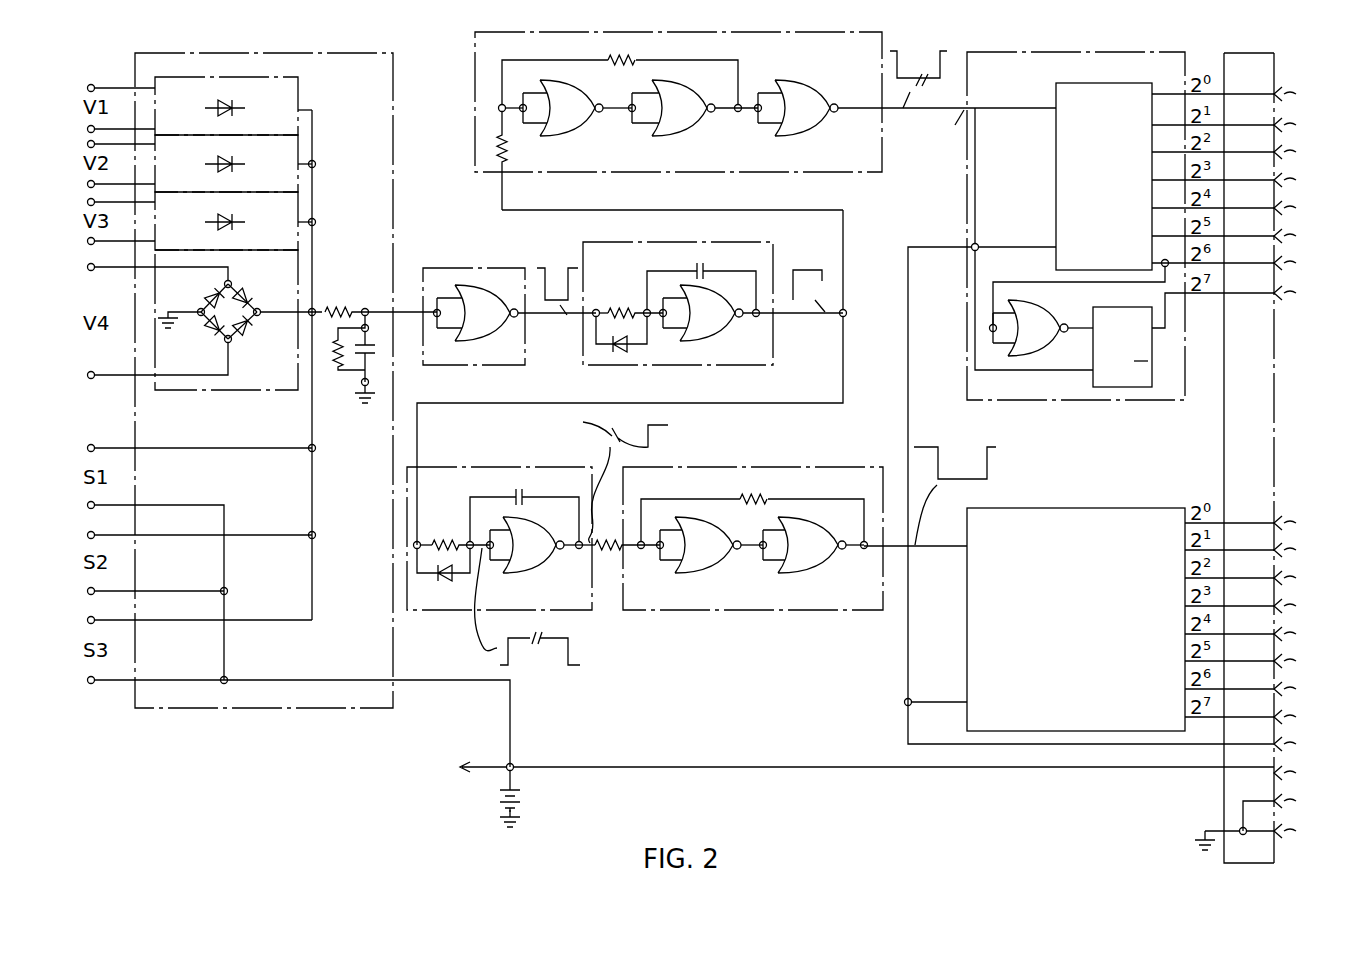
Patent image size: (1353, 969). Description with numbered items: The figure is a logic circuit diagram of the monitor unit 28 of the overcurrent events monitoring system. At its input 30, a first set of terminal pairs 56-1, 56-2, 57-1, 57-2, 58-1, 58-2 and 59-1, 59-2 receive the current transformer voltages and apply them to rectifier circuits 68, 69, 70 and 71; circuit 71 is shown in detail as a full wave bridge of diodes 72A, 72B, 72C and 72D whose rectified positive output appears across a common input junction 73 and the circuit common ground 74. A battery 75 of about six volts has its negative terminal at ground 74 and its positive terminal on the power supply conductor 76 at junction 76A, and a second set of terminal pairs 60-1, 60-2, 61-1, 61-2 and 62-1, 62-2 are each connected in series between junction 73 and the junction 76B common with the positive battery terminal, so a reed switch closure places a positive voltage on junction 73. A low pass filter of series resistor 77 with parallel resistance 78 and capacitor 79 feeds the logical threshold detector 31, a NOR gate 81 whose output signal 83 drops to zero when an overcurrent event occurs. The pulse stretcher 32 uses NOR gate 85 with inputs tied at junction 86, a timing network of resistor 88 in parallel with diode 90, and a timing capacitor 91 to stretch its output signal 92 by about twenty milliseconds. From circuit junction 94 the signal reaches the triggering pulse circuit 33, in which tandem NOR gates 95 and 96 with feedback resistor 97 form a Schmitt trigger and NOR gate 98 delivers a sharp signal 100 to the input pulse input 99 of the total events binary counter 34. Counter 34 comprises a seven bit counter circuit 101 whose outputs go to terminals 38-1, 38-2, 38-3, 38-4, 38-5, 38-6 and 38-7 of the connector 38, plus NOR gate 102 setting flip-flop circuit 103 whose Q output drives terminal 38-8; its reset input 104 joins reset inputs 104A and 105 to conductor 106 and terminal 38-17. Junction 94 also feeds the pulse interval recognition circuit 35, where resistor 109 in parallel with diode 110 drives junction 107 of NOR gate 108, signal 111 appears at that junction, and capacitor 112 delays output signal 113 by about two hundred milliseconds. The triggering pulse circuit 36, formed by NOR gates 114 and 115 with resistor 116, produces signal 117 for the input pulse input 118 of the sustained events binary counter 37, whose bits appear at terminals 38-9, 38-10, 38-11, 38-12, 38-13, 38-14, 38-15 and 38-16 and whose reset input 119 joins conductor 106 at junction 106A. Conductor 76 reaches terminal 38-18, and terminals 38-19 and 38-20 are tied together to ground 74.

The monitor unit 28 is at (712, 812).
The input 30 is at (230, 52).
The logical threshold detector 31 is at (454, 268).
The pulse stretcher 32 is at (714, 244).
The triggering pulse circuit 33 is at (514, 30).
The total events binary counter 34 is at (1122, 56).
The pulse interval recognition circuit 35 is at (537, 468).
The triggering pulse circuit 36 is at (850, 470).
The sustained events binary counter 37 is at (1106, 508).
The external socket connector 38 is at (1242, 56).
The connector terminal 38-1 is at (1309, 93).
The connector terminal 38-2 is at (1309, 124).
The connector terminal 38-3 is at (1309, 151).
The connector terminal 38-4 is at (1309, 179).
The connector terminal 38-5 is at (1309, 207).
The connector terminal 38-6 is at (1309, 235).
The connector terminal 38-7 is at (1309, 262).
The connector terminal 38-8 is at (1309, 292).
The connector terminal 38-9 is at (1309, 522).
The connector terminal 38-10 is at (1313, 549).
The connector terminal 38-11 is at (1313, 577).
The connector terminal 38-12 is at (1313, 605).
The connector terminal 38-13 is at (1313, 633).
The connector terminal 38-14 is at (1313, 660).
The connector terminal 38-15 is at (1313, 688).
The connector terminal 38-16 is at (1313, 716).
The connector terminal 38-17 is at (1313, 743).
The connector terminal 38-18 is at (1313, 772).
The connector terminal 38-19 is at (1298, 809).
The connector terminal 38-20 is at (1279, 830).
The input terminal 56-1 is at (88, 86).
The input terminal 56-2 is at (88, 128).
The input terminal 57-1 is at (88, 144).
The input terminal 57-2 is at (88, 184).
The input terminal 58-1 is at (88, 202).
The input terminal 58-2 is at (88, 241).
The input terminal 59-1 is at (88, 267).
The input terminal 59-2 is at (88, 375).
The input terminal 60-1 is at (88, 448).
The input terminal 60-2 is at (88, 505).
The input terminal 61-1 is at (88, 535).
The input terminal 61-2 is at (88, 591).
The input terminal 62-1 is at (88, 620).
The input terminal 62-2 is at (275, 717).
The rectifier circuit 68 is at (292, 111).
The rectifier circuit 69 is at (292, 167).
The rectifier circuit 70 is at (292, 224).
The rectifier circuit 71 is at (290, 280).
The diode 72A is at (208, 294).
The diode 72B is at (247, 298).
The diode 72C is at (208, 336).
The diode 72D is at (240, 334).
The common input junction 73 is at (326, 299).
The circuit common ground 74 is at (164, 314).
The battery 75 is at (516, 802).
The common circuit power supply conductor 76 is at (604, 768).
The junction 76A is at (514, 764).
The junction 76B is at (228, 678).
The resistor 77 is at (340, 305).
The resistance 78 is at (332, 360).
The capacitor 79 is at (383, 352).
The NOR logic gate 81 is at (466, 294).
The logic output signal 83 is at (550, 277).
The NOR logic gate 85 is at (714, 298).
The junction 86 is at (642, 308).
The resistor 88 is at (610, 310).
The diode 90 is at (624, 350).
The timing capacitor 91 is at (704, 274).
The logic output signal 92 is at (809, 274).
The circuit junction 94 is at (846, 312).
The NOR gate 95 is at (569, 88).
The NOR gate 96 is at (683, 88).
The resistor 97 is at (619, 56).
The NOR gate 98 is at (798, 84).
The input pulse input 99 is at (947, 127).
The triggering logic signal 100 is at (942, 46).
The seven bit binary counter circuit 101 is at (1098, 84).
The NOR gate 102 is at (1020, 300).
The flip-flop circuit 103 is at (1118, 304).
The reset input 104 is at (968, 246).
The reset input 104A is at (1050, 244).
The reset input 105 is at (1086, 376).
The conductor 106 is at (903, 270).
The junction 106A is at (900, 700).
The junction 107 is at (463, 539).
The NOR gate 108 is at (533, 518).
The resistor 109 is at (440, 542).
The diode 110 is at (446, 584).
The signal 111 is at (570, 642).
The capacitor 112 is at (522, 496).
The logic output signal 113 is at (645, 477).
The NOR gate 114 is at (690, 518).
The NOR gate 115 is at (808, 518).
The resistor 116 is at (754, 494).
The logic output signal 117 is at (998, 444).
The input pulse input 118 is at (958, 552).
The reset input 119 is at (964, 702).